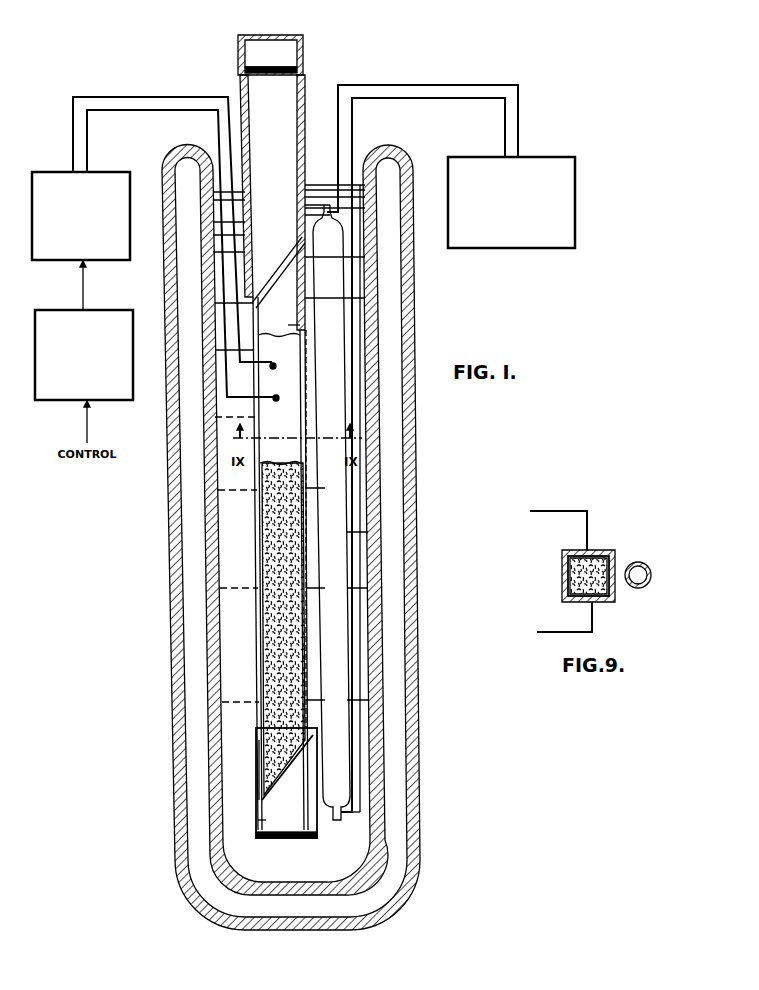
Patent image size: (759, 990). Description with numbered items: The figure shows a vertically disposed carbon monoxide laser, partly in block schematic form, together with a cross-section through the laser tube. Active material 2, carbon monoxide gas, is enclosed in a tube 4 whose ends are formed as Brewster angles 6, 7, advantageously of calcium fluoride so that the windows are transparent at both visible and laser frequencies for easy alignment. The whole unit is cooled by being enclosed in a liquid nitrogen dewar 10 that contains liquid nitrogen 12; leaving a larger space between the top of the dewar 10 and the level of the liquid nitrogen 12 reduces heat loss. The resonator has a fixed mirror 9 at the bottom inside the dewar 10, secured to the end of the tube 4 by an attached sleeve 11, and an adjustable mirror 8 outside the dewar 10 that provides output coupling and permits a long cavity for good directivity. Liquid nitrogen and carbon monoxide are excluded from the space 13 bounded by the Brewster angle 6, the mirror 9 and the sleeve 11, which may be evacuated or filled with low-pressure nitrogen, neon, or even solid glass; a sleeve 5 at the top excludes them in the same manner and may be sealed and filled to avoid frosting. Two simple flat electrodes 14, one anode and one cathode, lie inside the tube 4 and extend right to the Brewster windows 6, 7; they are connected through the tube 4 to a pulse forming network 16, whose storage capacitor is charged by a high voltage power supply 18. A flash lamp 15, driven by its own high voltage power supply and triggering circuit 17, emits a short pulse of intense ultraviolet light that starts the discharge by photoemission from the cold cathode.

In FIG. 1, the active material 2 is at (264, 533).
In FIG. 9, the active material 2 is at (612, 590).
In FIG. 1, the tube 4 is at (262, 618).
In FIG. 9, the tube 4 is at (575, 550).
In FIG. 1, the sleeve 5 is at (305, 97).
In FIG. 1, the Brewster angle 6 is at (283, 35).
In FIG. 1, the Brewster angle 7 is at (275, 266).
In FIG. 1, the mirror 8 is at (287, 767).
In FIG. 1, the fixed mirror 9 is at (292, 840).
In FIG. 1, the dewar 10 is at (168, 555).
In FIG. 1, the sleeve 11 is at (258, 775).
In FIG. 1, the liquid nitrogen 12 is at (325, 185).
In FIG. 1, the space 13 is at (258, 820).
In FIG. 1, the flat electrodes 14 is at (292, 382).
In FIG. 9, the flat electrodes 14 is at (597, 550).
In FIG. 1, the flash lamp 15 is at (337, 530).
In FIG. 9, the flash lamp 15 is at (640, 562).
In FIG. 1, the pulse forming network 16 is at (100, 260).
In FIG. 1, the high voltage power supply and triggering circuit 17 is at (522, 248).
In FIG. 1, the high voltage power supply 18 is at (108, 400).